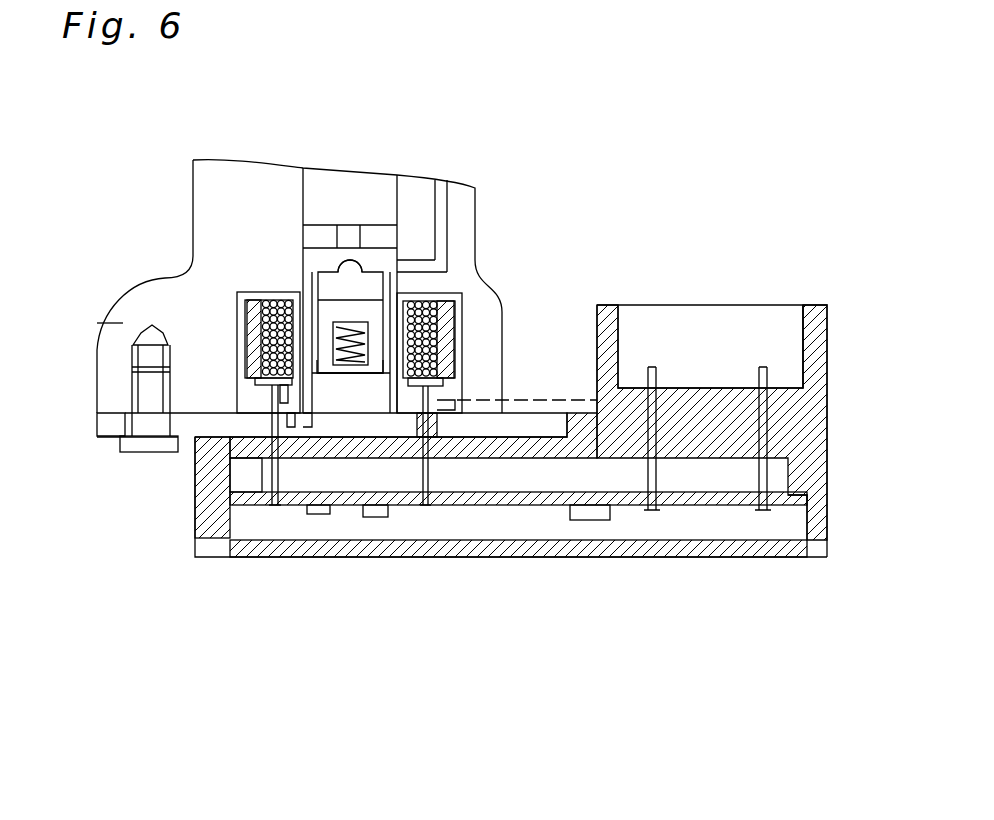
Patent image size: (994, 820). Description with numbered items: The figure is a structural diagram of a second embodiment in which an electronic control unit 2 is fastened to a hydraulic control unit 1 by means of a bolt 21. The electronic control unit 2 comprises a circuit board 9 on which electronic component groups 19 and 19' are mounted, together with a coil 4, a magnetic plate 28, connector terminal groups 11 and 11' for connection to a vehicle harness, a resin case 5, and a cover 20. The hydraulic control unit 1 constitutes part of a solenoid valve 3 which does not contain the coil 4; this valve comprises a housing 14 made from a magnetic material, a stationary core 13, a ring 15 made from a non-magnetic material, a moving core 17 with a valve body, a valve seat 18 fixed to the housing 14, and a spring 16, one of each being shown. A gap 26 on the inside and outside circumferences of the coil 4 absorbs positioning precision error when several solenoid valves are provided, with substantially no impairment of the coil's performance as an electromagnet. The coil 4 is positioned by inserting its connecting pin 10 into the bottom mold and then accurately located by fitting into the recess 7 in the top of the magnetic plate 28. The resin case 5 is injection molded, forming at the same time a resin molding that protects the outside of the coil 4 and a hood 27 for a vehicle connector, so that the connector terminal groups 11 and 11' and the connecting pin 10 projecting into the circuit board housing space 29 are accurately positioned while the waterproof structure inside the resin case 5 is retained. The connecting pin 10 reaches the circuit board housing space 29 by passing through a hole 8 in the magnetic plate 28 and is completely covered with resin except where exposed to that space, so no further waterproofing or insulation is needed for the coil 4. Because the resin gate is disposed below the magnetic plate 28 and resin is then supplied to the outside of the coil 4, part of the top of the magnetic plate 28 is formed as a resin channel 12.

The hydraulic control unit 1 is at (188, 247).
The electronic control unit 2 is at (830, 405).
The solenoid valve 3 is at (318, 260).
The coil 4 is at (440, 320).
The resin case 5 is at (200, 510).
The recess 7 is at (243, 456).
The hole 8 is at (438, 428).
The circuit board 9 is at (790, 513).
The connecting pin 10 is at (268, 506).
The connector terminal group 11 is at (643, 376).
The connector terminal group 11' is at (758, 376).
The resin channel 12 is at (551, 413).
The stationary core 13 is at (355, 408).
The housing 14 is at (122, 323).
The ring 15 is at (398, 283).
The spring 16 is at (333, 323).
The moving core 17 is at (364, 262).
The valve seat 18 is at (338, 250).
The electronic component group 19 is at (585, 560).
The electronic component group 19' is at (377, 561).
The cover 20 is at (750, 557).
The bolt 21 is at (122, 441).
The gap 26 is at (243, 330).
The hood 27 is at (818, 310).
The magnetic plate 28 is at (110, 420).
The circuit board housing space 29 is at (518, 518).